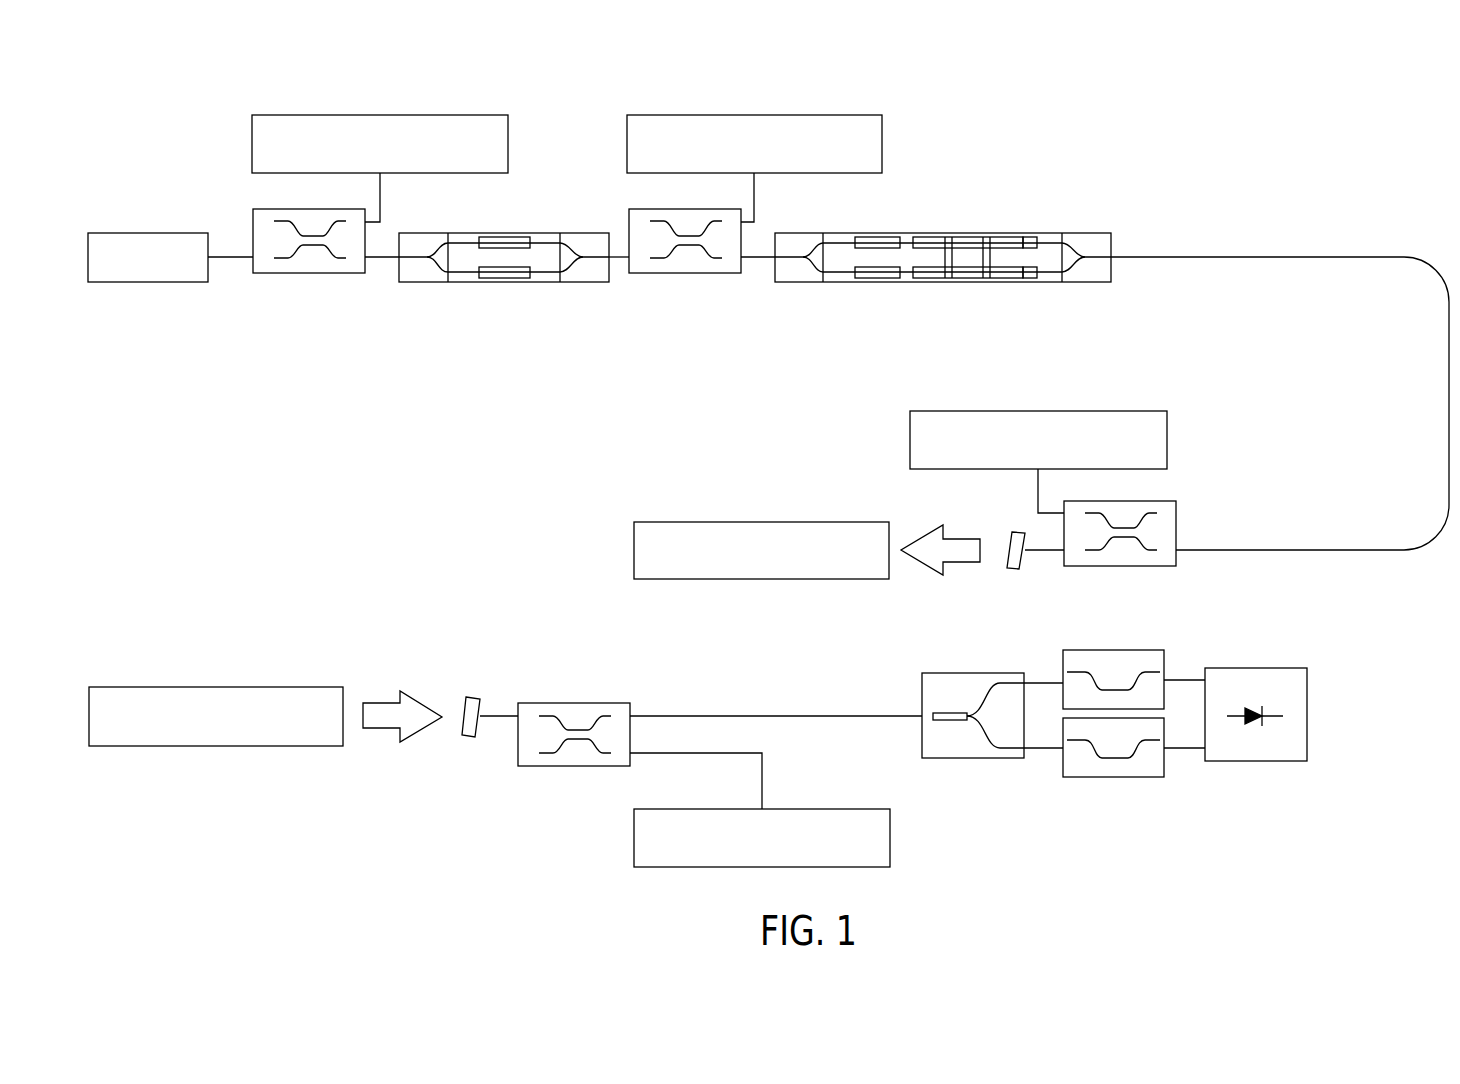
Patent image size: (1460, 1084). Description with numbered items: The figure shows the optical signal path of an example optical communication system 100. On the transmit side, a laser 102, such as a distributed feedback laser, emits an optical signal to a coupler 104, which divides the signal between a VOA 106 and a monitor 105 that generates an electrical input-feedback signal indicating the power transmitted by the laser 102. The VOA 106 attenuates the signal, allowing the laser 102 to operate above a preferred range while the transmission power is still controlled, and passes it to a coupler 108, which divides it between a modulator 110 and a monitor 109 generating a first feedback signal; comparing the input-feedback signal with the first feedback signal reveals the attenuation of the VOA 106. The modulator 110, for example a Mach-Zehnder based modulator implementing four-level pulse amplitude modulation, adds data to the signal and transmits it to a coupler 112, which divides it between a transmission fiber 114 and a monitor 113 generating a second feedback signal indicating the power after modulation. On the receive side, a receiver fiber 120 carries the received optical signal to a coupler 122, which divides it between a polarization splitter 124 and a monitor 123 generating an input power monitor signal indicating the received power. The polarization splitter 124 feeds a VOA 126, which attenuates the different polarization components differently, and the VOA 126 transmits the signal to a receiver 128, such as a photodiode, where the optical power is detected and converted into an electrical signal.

The optical communication system 100 is at (170, 100).
The laser 102 is at (148, 283).
The coupler 104 is at (308, 275).
The monitor 105 is at (383, 112).
The VOA 106 is at (547, 283).
The coupler 108 is at (683, 275).
The monitor 109 is at (767, 112).
The modulator 110 is at (933, 283).
The coupler 112 is at (1122, 568).
The monitor 113 is at (1112, 411).
The transmission fiber 114 is at (745, 580).
The receiver fiber 120 is at (213, 747).
The coupler 122 is at (553, 766).
The monitor 123 is at (847, 809).
The polarization splitter 124 is at (963, 760).
The VOA 126 is at (1115, 778).
The receiver 128 is at (1257, 762).